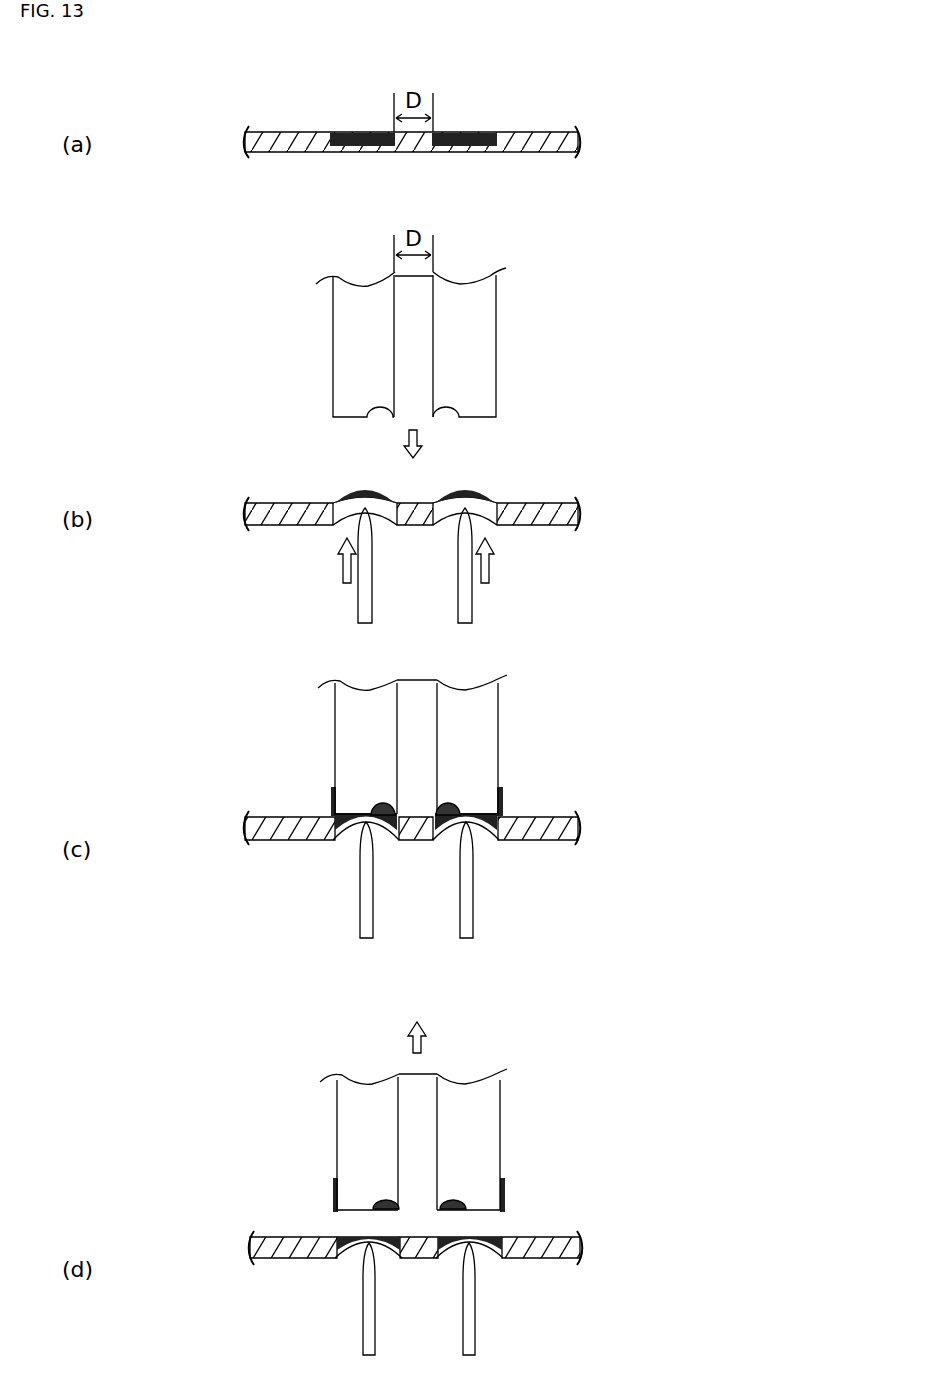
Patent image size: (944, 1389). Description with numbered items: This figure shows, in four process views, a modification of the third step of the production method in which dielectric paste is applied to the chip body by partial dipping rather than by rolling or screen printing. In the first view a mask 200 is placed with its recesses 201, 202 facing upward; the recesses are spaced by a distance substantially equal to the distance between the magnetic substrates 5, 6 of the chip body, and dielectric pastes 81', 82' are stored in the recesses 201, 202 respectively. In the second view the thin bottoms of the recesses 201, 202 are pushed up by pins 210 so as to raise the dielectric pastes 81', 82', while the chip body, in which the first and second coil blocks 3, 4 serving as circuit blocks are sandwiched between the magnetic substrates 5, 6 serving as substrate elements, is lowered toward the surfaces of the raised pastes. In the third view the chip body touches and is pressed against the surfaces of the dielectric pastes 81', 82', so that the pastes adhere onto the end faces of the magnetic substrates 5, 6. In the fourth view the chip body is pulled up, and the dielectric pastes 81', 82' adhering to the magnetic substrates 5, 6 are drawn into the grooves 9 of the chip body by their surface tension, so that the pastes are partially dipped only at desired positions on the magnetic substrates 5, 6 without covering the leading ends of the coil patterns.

The mask 200 is at (578, 142).
The recess 201 is at (335, 133).
The recess 202 is at (486, 131).
The dielectric paste 81' is at (309, 642).
The dielectric paste 82' is at (515, 637).
The first coil block 3 is at (495, 741).
The second coil block 4 is at (418, 325).
The magnetic substrate 5 is at (352, 341).
The magnetic substrate 6 is at (482, 362).
The groove 9 is at (378, 412).
The pin 210 is at (358, 601).